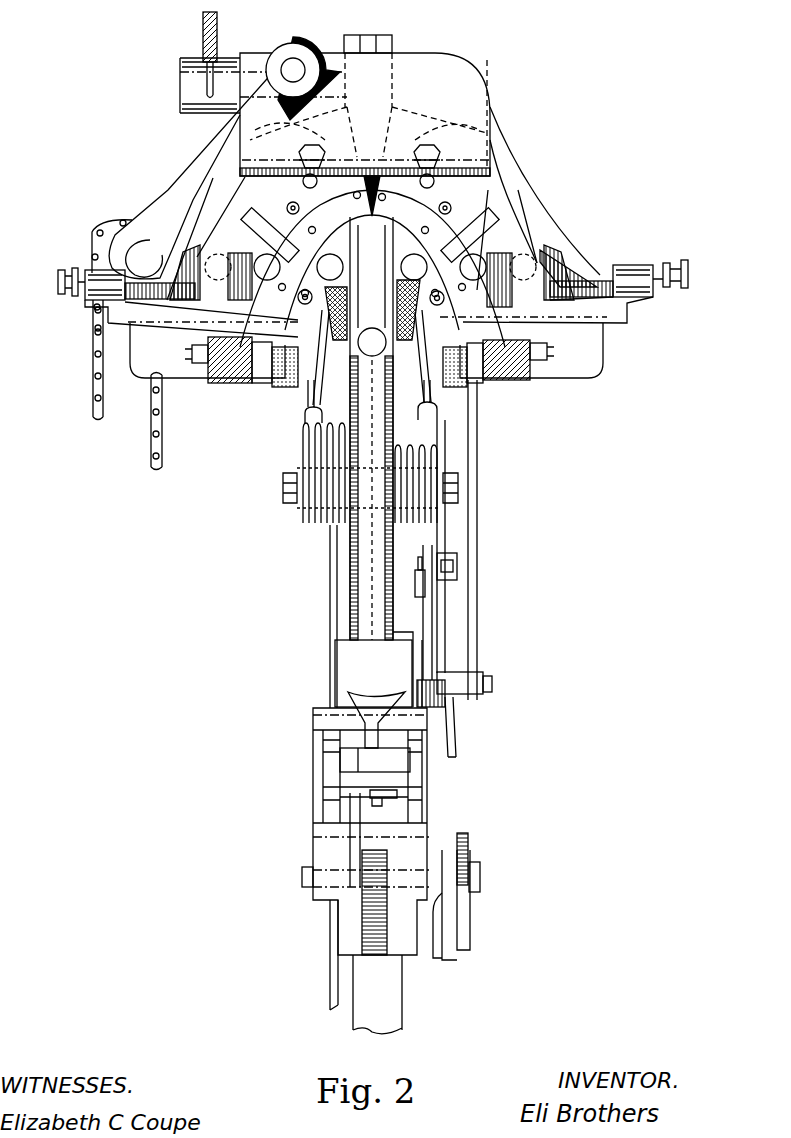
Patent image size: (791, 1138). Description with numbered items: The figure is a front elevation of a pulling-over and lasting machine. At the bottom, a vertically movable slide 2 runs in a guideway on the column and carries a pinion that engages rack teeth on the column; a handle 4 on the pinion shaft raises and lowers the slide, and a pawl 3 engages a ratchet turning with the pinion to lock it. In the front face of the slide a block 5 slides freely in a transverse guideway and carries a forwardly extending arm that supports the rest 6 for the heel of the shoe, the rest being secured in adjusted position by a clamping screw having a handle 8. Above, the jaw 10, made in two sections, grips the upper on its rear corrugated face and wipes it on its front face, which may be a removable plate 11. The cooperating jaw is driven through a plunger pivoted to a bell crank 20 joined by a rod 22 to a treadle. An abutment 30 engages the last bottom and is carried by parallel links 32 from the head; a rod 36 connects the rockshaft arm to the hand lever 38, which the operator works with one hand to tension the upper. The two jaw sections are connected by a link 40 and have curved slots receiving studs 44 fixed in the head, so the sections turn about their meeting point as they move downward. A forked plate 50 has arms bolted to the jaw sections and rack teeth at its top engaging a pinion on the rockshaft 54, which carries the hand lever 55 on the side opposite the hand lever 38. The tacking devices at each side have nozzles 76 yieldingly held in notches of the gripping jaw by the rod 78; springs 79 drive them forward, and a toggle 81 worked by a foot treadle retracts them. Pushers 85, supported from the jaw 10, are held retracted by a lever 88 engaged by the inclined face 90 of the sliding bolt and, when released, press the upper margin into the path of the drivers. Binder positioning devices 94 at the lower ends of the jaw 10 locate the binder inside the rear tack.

The slide 2 is at (427, 715).
The pawl 3 is at (463, 893).
The handle 4 is at (450, 933).
The block 5 is at (410, 760).
The rest 6 is at (350, 700).
The handle 8 is at (397, 793).
The jaw 10 is at (445, 242).
The removable plate 11 is at (371, 279).
The bell crank 20 is at (337, 392).
The rod 22 is at (330, 588).
The abutment 30 is at (380, 420).
The parallel links 32 is at (371, 428).
The rod 36 is at (477, 507).
The hand lever 38 is at (433, 600).
The link 40 is at (369, 151).
The studs 44 is at (427, 153).
The forked plate 50 is at (502, 165).
The rockshaft 54 is at (294, 62).
The hand lever 55 is at (217, 46).
The nozzles 76 is at (460, 370).
The rod 78 is at (413, 350).
The springs 79 is at (447, 450).
The toggle 81 is at (457, 557).
The pushers 85 is at (565, 278).
The lever 88 is at (542, 265).
The inclined face 90 is at (265, 268).
The binder positioning devices 94 is at (265, 385).